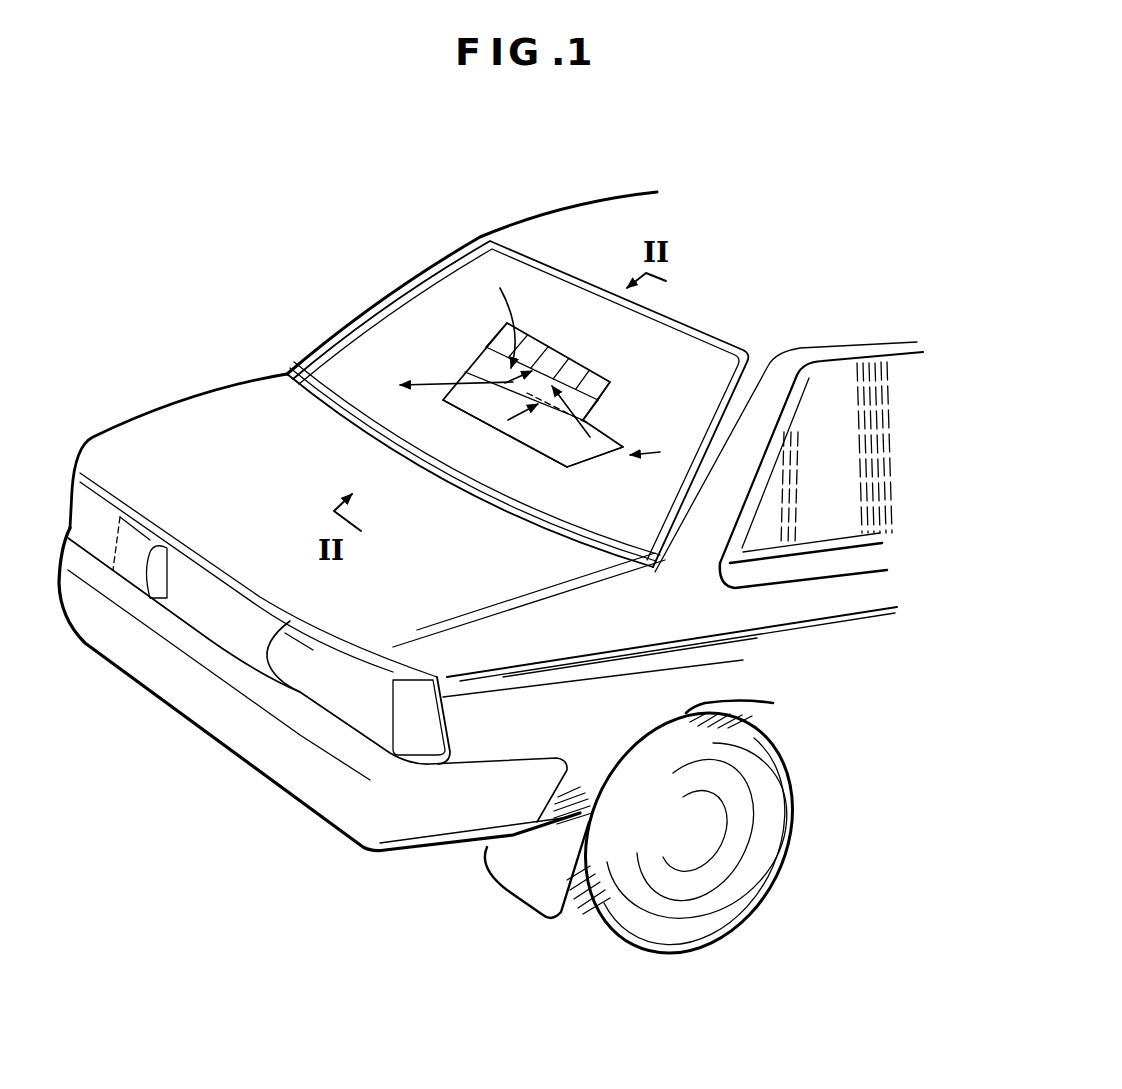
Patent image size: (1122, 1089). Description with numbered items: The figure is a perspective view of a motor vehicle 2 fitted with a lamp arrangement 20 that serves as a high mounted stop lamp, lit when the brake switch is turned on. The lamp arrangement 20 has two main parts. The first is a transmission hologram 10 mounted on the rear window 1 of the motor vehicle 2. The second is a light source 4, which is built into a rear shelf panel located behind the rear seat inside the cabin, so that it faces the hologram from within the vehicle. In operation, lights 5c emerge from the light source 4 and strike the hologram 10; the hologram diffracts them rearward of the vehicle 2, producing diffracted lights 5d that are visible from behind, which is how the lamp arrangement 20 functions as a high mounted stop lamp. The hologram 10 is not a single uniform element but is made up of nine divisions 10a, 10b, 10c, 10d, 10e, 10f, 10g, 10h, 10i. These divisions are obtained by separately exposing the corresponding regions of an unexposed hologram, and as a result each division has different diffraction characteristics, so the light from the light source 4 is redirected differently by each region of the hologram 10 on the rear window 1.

The rear window 1 is at (673, 330).
The motor vehicle 2 is at (480, 688).
The light source 4 is at (613, 560).
The lights 5c is at (610, 467).
The diffracted lights 5d is at (437, 390).
The transmission hologram 10 is at (555, 374).
The division 10a is at (560, 455).
The division 10b is at (530, 430).
The division 10c is at (480, 370).
The division 10d is at (583, 412).
The division 10e is at (573, 360).
The division 10f is at (487, 350).
The division 10g is at (612, 382).
The division 10h is at (557, 350).
The division 10i is at (527, 347).
The lamp arrangement 20 is at (660, 452).